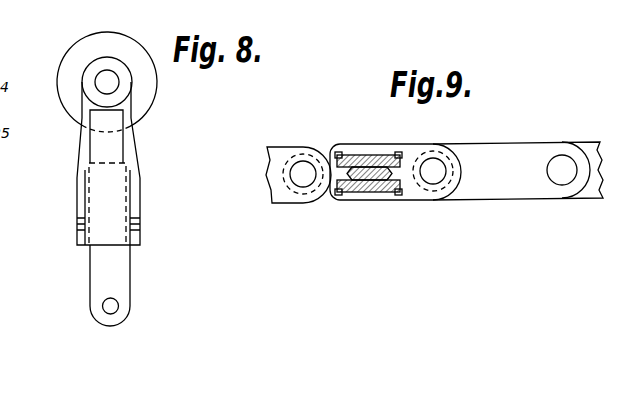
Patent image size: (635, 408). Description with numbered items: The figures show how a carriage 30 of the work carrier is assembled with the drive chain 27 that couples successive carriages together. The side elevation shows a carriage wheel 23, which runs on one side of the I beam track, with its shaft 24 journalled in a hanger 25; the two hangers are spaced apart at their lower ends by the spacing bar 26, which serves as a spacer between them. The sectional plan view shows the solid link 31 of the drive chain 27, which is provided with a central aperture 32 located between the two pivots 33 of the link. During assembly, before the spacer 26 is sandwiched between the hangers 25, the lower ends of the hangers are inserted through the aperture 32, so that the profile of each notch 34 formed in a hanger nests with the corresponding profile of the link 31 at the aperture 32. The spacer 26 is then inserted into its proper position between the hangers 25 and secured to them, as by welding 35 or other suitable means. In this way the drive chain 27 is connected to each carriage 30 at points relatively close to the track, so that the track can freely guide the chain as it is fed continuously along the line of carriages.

In FIG. 8, the carriage wheel 23 is at (141, 100).
In FIG. 8, the shaft 24 is at (106, 80).
In FIG. 8, the hanger 25 is at (137, 169).
In FIG. 9, the hanger 25 is at (363, 158).
In FIG. 8, the spacing bar 26 is at (97, 271).
In FIG. 9, the drive chain 27 is at (478, 141).
In FIG. 8, the carriage 30 is at (146, 192).
In FIG. 9, the solid link 31 is at (356, 198).
In FIG. 9, the central aperture 32 is at (333, 187).
In FIG. 9, the pivot 33 is at (303, 170).
In FIG. 8, the notch 34 is at (78, 223).
In FIG. 9, the welding 35 is at (400, 157).